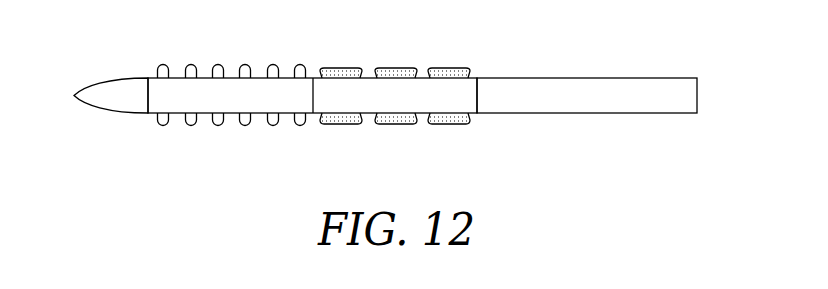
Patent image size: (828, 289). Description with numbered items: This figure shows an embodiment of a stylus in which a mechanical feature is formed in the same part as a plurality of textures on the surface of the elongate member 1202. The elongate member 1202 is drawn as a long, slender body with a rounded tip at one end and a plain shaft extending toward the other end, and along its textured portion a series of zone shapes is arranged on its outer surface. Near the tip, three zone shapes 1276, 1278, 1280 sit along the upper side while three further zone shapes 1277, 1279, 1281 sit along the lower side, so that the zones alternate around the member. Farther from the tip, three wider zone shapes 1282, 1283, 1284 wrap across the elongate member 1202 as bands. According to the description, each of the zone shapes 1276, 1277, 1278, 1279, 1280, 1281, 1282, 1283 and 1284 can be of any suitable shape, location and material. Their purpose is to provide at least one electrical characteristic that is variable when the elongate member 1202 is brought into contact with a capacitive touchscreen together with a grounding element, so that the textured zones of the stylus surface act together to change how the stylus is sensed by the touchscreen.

The elongate member 1202 is at (627, 76).
The zone shape 1276 is at (163, 63).
The zone shape 1277 is at (192, 126).
The zone shape 1278 is at (218, 63).
The zone shape 1279 is at (245, 126).
The zone shape 1280 is at (273, 63).
The zone shape 1281 is at (300, 126).
The zone shape 1282 is at (341, 67).
The zone shape 1283 is at (397, 67).
The zone shape 1284 is at (450, 67).